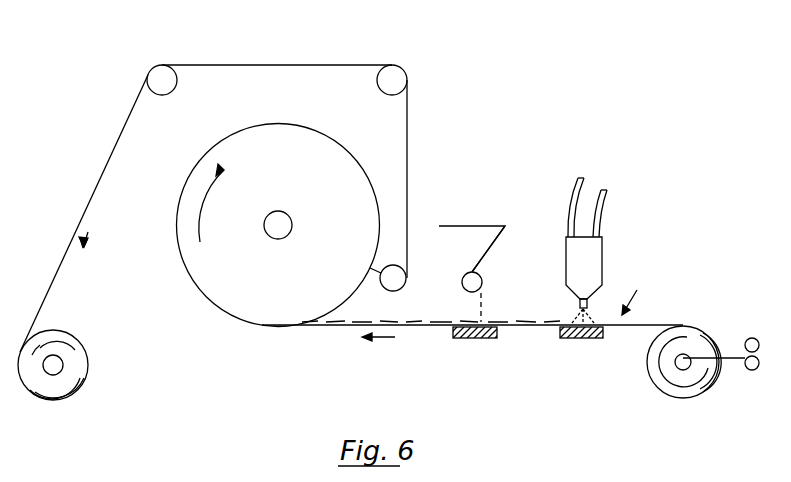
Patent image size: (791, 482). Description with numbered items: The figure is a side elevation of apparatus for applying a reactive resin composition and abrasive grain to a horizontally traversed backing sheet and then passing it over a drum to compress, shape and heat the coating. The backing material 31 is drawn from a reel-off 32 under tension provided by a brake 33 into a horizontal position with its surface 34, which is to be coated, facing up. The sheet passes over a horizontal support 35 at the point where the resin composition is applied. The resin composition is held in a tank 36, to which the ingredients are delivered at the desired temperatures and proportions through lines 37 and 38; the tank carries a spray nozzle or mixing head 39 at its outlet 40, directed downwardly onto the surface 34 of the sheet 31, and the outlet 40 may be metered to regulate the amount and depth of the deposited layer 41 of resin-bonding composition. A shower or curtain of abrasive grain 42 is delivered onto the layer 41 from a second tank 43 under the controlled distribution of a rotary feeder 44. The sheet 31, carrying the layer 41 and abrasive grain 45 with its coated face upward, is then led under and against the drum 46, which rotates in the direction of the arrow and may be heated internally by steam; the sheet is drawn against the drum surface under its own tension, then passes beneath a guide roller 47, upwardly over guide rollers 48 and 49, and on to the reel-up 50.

The backing material 31 is at (632, 328).
The reel-off 32 is at (667, 392).
The brake 33 is at (745, 340).
The surface 34 is at (644, 290).
The horizontal support 35 is at (587, 340).
The tank 36 is at (602, 252).
The line 37 is at (570, 200).
The line 38 is at (604, 203).
The spray nozzle or mixing head 39 is at (590, 302).
The outlet 40 is at (578, 305).
The deposited layer 41 is at (508, 305).
The shower or curtain of abrasive grain 42 is at (498, 278).
The tank 43 is at (492, 240).
The rotary feeder 44 is at (469, 272).
The abrasive grain 45 is at (413, 322).
The drum 46 is at (215, 289).
The guide roller 47 is at (380, 282).
The guide roller 48 is at (396, 75).
The guide roller 49 is at (165, 78).
The reel-up 50 is at (78, 388).